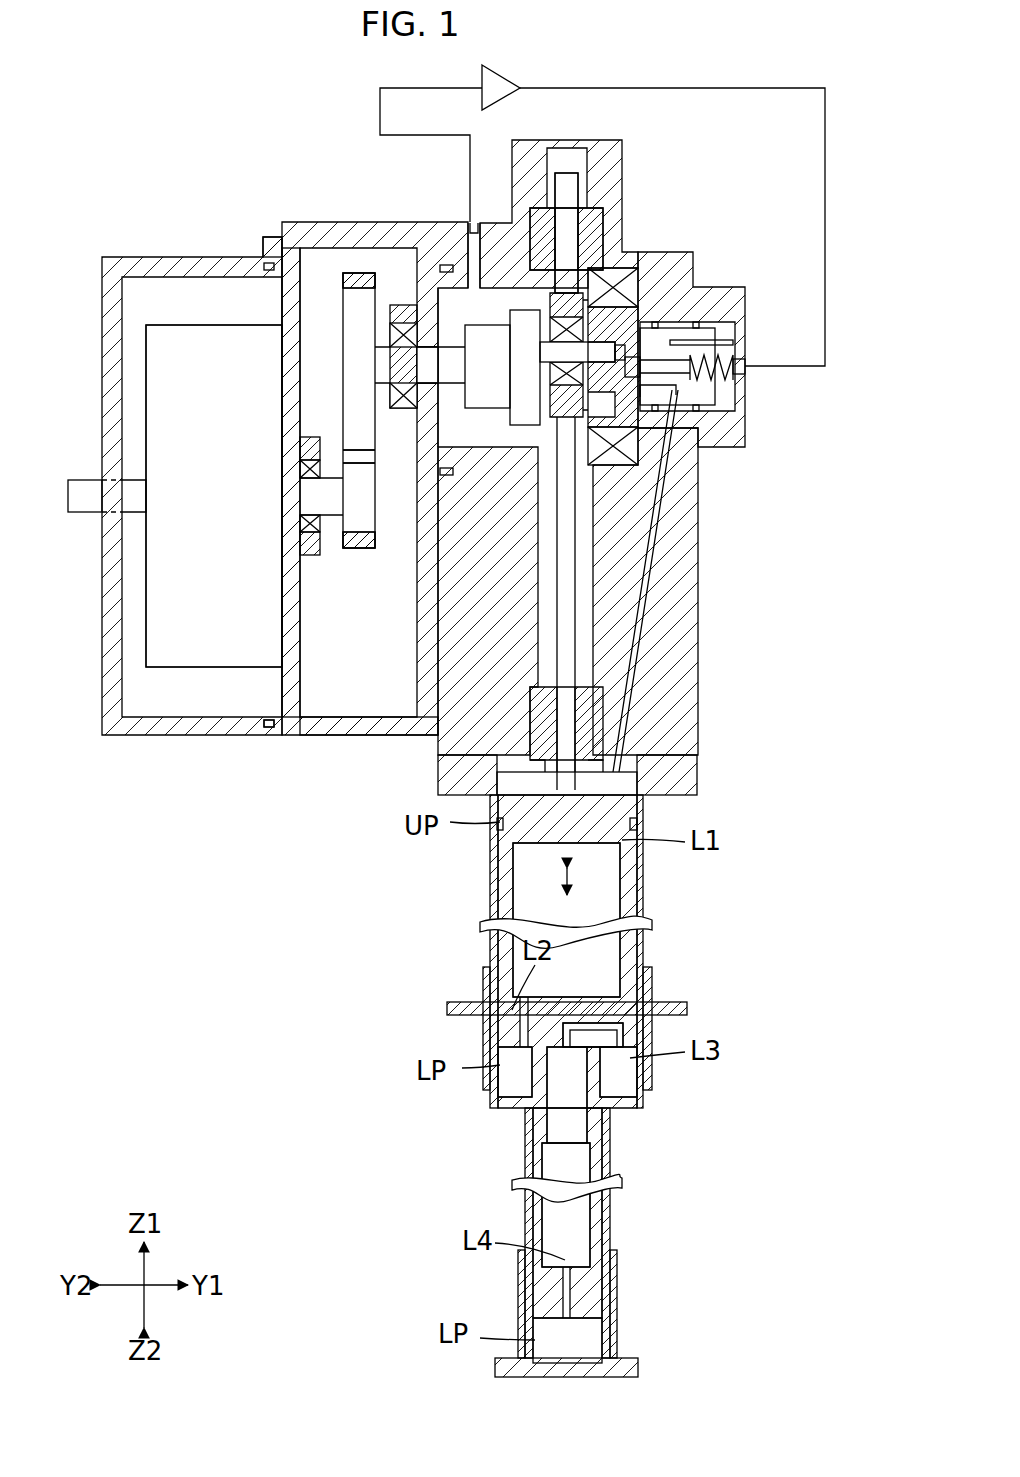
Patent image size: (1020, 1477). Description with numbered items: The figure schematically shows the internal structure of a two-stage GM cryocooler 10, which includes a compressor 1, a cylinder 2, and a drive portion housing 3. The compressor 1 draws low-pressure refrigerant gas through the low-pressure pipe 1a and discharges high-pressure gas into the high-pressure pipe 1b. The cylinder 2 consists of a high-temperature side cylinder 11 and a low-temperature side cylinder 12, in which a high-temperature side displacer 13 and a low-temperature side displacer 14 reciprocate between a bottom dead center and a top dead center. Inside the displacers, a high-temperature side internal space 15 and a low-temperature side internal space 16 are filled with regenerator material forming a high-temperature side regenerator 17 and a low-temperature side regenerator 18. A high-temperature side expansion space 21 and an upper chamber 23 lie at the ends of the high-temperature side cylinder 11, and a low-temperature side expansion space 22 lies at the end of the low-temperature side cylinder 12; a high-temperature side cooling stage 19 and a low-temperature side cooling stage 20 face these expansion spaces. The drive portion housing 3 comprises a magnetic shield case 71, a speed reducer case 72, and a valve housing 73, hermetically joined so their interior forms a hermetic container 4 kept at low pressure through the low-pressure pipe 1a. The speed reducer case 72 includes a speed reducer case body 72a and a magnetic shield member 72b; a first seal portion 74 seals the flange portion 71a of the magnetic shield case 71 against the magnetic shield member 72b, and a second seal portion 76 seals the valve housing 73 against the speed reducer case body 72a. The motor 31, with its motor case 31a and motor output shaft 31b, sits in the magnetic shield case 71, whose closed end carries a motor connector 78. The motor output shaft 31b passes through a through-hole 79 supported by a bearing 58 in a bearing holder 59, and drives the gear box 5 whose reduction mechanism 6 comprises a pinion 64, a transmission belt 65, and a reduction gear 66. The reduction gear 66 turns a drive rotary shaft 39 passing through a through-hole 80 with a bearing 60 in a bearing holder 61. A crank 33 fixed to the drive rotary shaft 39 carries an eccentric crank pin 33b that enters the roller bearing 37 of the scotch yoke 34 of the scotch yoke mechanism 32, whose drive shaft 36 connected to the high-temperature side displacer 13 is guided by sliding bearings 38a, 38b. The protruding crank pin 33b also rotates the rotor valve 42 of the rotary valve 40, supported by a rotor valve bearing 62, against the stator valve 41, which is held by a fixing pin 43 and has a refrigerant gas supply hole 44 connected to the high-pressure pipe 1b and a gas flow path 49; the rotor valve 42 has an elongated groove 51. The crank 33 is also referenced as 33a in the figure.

The compressor 1 is at (500, 75).
The low-pressure pipe 1a is at (405, 86).
The high-pressure pipe 1b is at (625, 86).
The cylinder 2 is at (478, 947).
The drive portion housing 3 is at (683, 183).
The hermetic container 4 is at (500, 270).
The gear box 5 is at (302, 113).
The reduction mechanism 6 is at (340, 240).
The GM cryocooler 10 is at (320, 1370).
The high-temperature side cylinder 11 is at (495, 880).
The low-temperature side cylinder 12 is at (530, 1160).
The high-temperature side displacer 13 is at (622, 875).
The low-temperature side displacer 14 is at (535, 1195).
The high-temperature side internal space 15 is at (625, 910).
The low-temperature side internal space 16 is at (580, 1170).
The high-temperature side regenerator 17 is at (625, 945).
The low-temperature side regenerator 18 is at (580, 1215).
The high-temperature side cooling stage 19 is at (655, 985).
The low-temperature side cooling stage 20 is at (612, 1270).
The high-temperature side expansion space 21 is at (625, 1070).
The low-temperature side expansion space 22 is at (590, 1335).
The upper chamber 23 is at (640, 778).
The motor 31 is at (155, 680).
The motor case 31a is at (172, 340).
The motor output shaft 31b is at (342, 560).
The scotch yoke mechanism 32 is at (566, 233).
The crank 33 is at (470, 300).
The sensor element 33a is at (474, 228).
The crank pin 33b is at (492, 330).
The scotch yoke 34 is at (567, 168).
The drive shaft 36 is at (600, 185).
The roller bearing 37 is at (612, 262).
The sliding bearing 38a is at (585, 228).
The sliding bearing 38b is at (530, 740).
The drive rotary shaft 39 is at (480, 400).
The rotary valve 40 is at (768, 212).
The stator valve 41 is at (700, 287).
The rotor valve 42 is at (685, 275).
The fixing pin 43 is at (735, 328).
The refrigerant gas supply hole 44 is at (725, 400).
The gas flow path 49 is at (655, 615).
The elongated groove 51 is at (735, 430).
The bearing 58 is at (330, 500).
The bearing holder 59 is at (310, 448).
The bearing 60 is at (418, 440).
The bearing holder 61 is at (395, 310).
The rotor valve bearing 62 is at (645, 300).
The pinion 64 is at (372, 560).
The transmission belt 65 is at (343, 298).
The reduction gear 66 is at (350, 352).
The magnetic shield case 71 is at (170, 725).
The flange portion 71a is at (262, 237).
The speed reducer case 72 is at (312, 220).
The speed reducer case body 72a is at (325, 735).
The magnetic shield member 72b is at (290, 735).
The valve housing 73 is at (700, 550).
The first seal portion 74 is at (268, 728).
The second seal portion 76 is at (378, 540).
The motor connector 78 is at (85, 515).
The through-hole 79 is at (305, 496).
The through-hole 80 is at (357, 268).